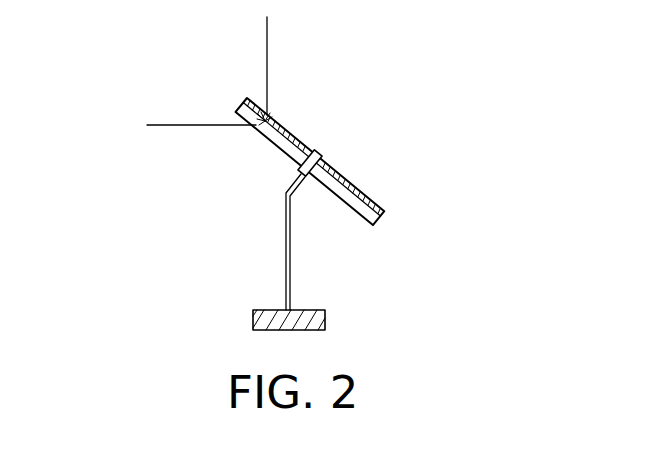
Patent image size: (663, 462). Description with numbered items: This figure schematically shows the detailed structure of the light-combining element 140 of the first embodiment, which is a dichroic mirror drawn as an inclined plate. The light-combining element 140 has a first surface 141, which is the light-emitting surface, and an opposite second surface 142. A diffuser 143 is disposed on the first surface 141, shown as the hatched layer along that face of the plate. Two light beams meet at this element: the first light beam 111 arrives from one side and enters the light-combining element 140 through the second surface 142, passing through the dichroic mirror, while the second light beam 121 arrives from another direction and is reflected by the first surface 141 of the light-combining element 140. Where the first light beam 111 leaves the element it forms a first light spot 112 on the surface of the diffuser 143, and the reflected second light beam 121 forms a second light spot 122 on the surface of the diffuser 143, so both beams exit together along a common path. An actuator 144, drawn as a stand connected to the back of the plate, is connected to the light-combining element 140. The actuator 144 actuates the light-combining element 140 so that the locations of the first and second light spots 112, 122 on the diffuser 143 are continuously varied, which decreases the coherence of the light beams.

The first light beam 111 is at (172, 124).
The first light spot 112 is at (257, 131).
The second light beam 121 is at (268, 62).
The second light spot 122 is at (269, 110).
The light-combining element 140 is at (334, 214).
The first surface 141 is at (372, 203).
The second surface 142 is at (345, 214).
The diffuser 143 is at (353, 174).
The actuator 144 is at (283, 257).